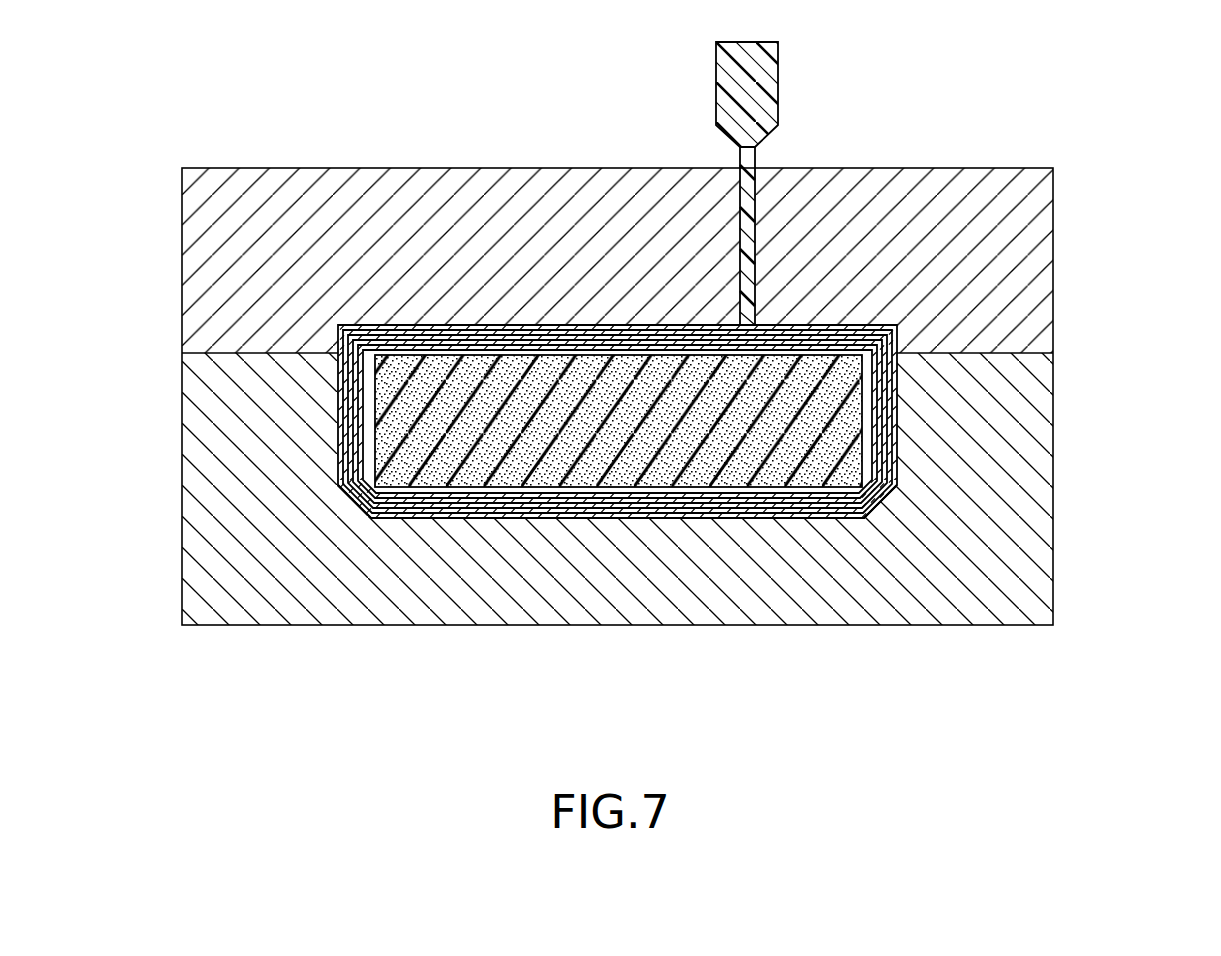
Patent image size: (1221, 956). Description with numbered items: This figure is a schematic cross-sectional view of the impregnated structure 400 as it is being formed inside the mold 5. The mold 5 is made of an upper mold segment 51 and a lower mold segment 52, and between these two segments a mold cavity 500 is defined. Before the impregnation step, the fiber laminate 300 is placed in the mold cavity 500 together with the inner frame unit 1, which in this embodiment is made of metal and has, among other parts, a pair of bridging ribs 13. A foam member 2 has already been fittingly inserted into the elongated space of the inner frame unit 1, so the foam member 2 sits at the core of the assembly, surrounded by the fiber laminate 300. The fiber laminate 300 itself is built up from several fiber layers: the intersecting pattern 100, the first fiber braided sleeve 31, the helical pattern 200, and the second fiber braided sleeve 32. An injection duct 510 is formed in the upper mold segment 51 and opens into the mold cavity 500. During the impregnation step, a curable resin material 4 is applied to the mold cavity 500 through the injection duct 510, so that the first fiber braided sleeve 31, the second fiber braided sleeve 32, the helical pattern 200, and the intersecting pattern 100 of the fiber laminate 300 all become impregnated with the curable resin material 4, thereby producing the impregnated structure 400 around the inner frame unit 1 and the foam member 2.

The mold 5 is at (688, 396).
The upper mold segment 51 is at (1032, 322).
The lower mold segment 52 is at (1028, 422).
The mold cavity 500 is at (338, 325).
The fiber laminate 300 is at (574, 372).
The second fiber braided sleeve 32 is at (413, 330).
The first fiber braided sleeve 31 is at (430, 342).
The intersecting pattern 100 is at (455, 348).
The helical pattern 200 is at (513, 332).
The impregnated structure 400 is at (563, 517).
The curable resin material 4 is at (724, 183).
The injection duct 510 is at (750, 210).
The inner frame unit 1 is at (578, 530).
The bridging ribs 13 is at (880, 500).
The foam member 2 is at (472, 455).